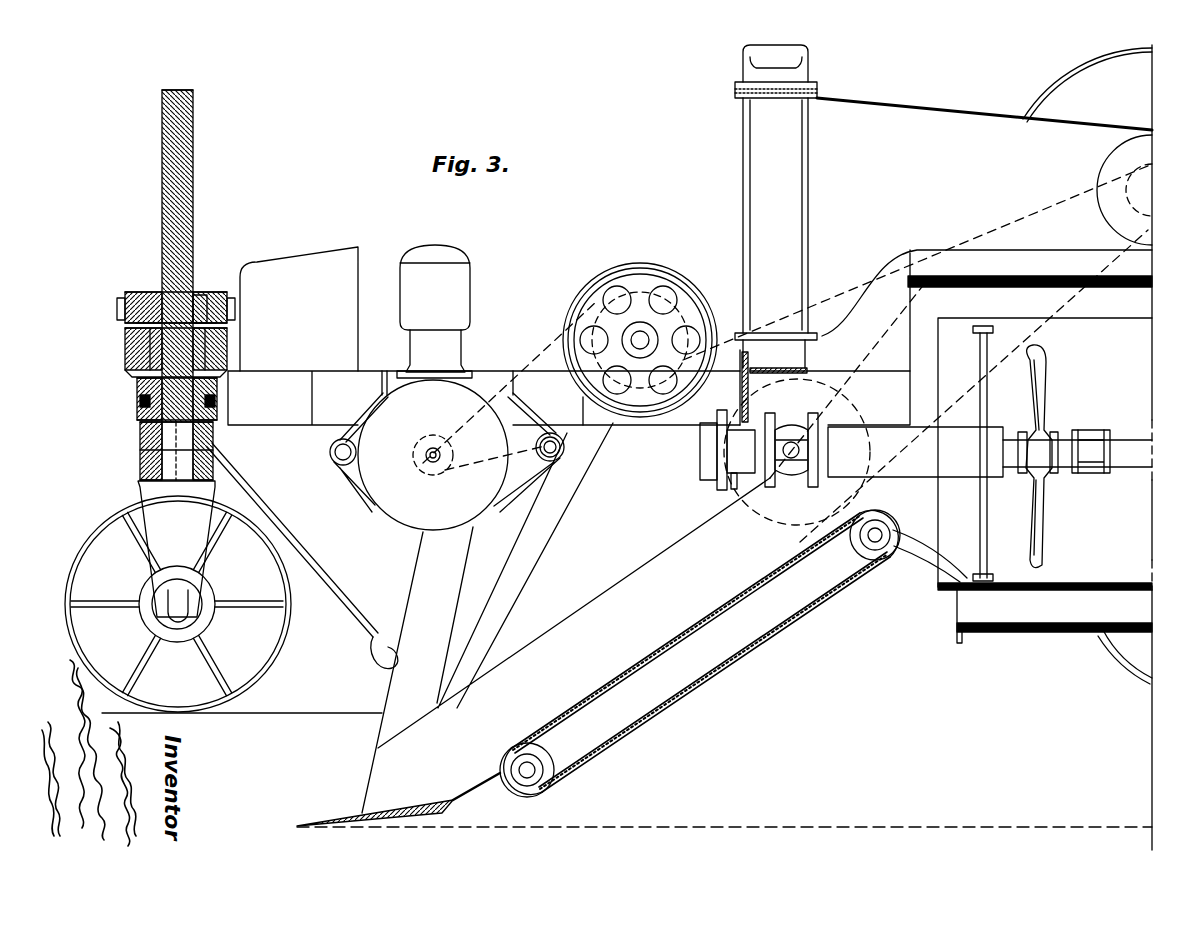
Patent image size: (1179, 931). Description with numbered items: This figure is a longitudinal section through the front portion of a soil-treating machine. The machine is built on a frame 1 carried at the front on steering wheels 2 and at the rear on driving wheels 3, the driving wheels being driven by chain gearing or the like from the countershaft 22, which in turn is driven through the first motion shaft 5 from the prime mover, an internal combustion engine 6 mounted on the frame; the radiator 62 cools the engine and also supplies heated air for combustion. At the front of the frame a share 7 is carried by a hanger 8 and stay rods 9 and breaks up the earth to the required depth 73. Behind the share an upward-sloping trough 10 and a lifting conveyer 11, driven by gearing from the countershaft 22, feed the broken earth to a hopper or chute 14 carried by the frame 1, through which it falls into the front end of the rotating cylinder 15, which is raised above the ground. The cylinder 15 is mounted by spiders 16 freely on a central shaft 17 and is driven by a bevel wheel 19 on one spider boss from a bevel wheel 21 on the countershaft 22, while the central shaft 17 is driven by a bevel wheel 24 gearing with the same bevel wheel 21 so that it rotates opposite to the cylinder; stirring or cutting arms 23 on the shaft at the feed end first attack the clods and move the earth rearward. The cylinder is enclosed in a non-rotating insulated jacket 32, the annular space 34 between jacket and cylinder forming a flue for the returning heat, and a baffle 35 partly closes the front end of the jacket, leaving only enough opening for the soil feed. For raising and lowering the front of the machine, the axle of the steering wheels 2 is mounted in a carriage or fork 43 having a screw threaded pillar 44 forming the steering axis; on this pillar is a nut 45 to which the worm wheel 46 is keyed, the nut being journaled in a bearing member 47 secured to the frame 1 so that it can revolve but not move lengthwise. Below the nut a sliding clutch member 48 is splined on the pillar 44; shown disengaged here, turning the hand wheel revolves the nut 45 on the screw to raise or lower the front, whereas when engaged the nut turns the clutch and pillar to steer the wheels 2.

The frame 1 is at (569, 387).
The steering wheels 2 is at (68, 556).
The driving wheels 3 is at (1122, 660).
The first motion shaft 5 is at (640, 340).
The internal combustion engine 6 is at (447, 450).
The share 7 is at (338, 816).
The hanger 8 is at (417, 670).
The stay rods 9 is at (294, 540).
The trough 10 is at (522, 560).
The lifting conveyer 11 is at (720, 608).
The hopper or chute 14 is at (908, 539).
The rotating cylinder 15 is at (1056, 588).
The spiders 16 is at (987, 515).
The central shaft 17 is at (1127, 446).
The bevel wheel 19 is at (813, 425).
The bevel wheel 21 is at (795, 420).
The countershaft 22 is at (770, 488).
The stirring or cutting arms 23 is at (1097, 460).
The bevel wheel 24 is at (770, 481).
The outer non-rotating jacket 32 is at (1024, 632).
The annular space 34 is at (1030, 294).
The baffle 35 is at (906, 336).
The carriage or fork 43 is at (176, 551).
The screw threaded pillar 44 is at (186, 174).
The nut 45 is at (202, 298).
The worm wheel 46 is at (118, 310).
The bearing member 47 is at (125, 353).
The sliding clutch member 48 is at (140, 398).
The radiator 62 is at (776, 209).
The required depth 73 is at (740, 826).